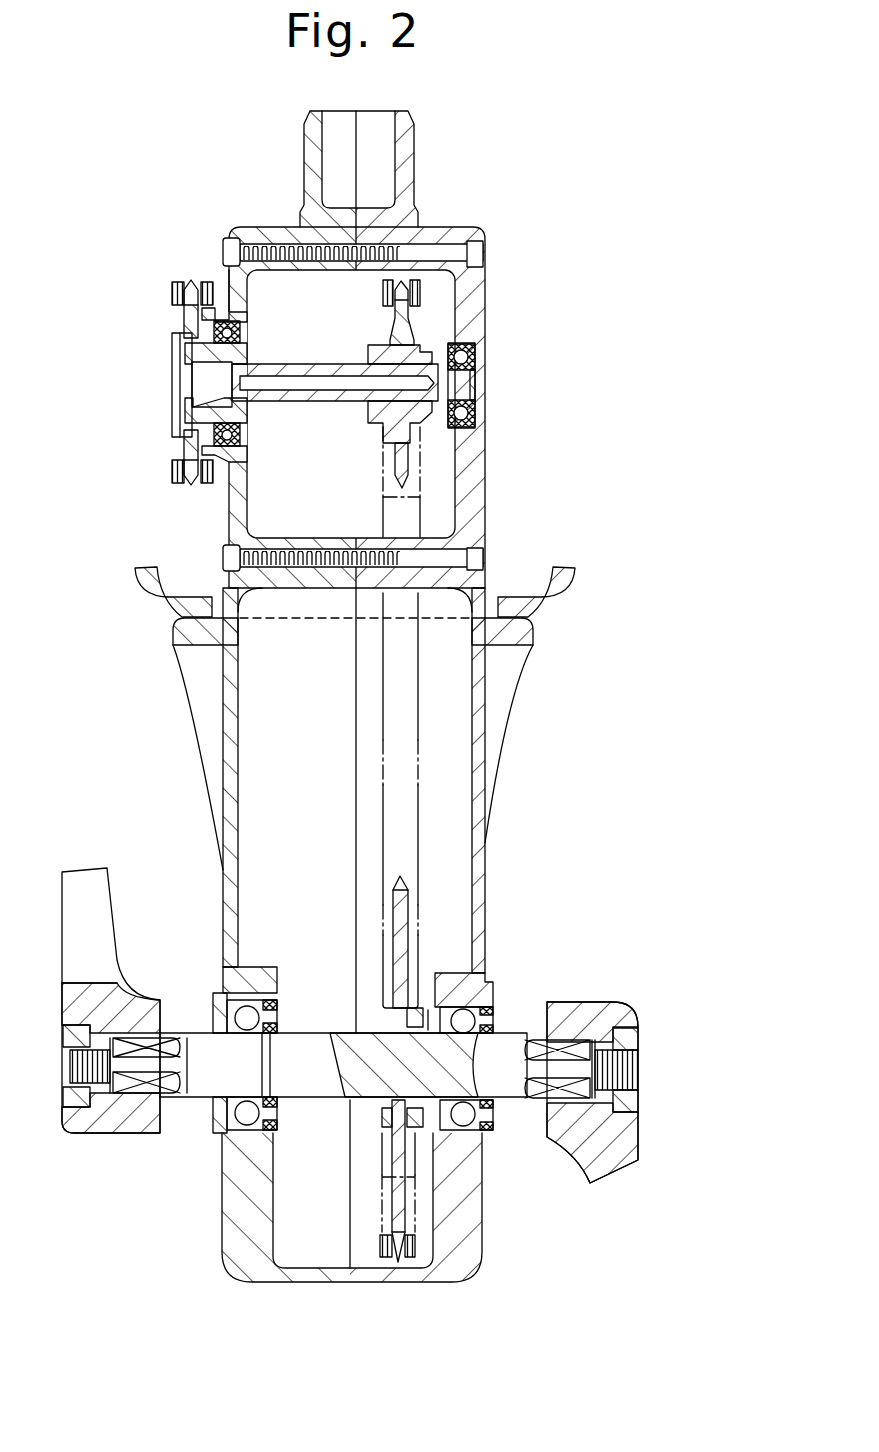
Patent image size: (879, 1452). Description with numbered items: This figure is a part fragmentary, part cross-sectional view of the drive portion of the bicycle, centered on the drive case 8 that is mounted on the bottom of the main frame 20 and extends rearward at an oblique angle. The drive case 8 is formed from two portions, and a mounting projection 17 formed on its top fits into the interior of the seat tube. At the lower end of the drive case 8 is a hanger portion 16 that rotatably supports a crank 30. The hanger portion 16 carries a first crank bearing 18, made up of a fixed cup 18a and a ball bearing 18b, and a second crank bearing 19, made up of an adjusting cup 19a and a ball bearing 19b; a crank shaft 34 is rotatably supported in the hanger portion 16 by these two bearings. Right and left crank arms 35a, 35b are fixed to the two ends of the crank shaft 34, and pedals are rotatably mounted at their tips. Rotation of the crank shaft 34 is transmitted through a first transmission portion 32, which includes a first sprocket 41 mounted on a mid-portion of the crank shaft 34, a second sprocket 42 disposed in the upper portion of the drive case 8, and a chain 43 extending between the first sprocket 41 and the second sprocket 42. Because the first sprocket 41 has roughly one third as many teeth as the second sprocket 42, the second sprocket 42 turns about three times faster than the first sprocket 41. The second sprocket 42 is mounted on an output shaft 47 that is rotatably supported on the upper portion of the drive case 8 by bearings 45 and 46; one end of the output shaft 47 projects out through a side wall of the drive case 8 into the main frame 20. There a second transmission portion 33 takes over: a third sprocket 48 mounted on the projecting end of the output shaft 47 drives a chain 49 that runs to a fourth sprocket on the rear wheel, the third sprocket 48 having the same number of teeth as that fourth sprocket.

The drive case 8 is at (490, 478).
The hanger portion 16 is at (485, 972).
The mounting projection 17 is at (412, 162).
The first crank bearing 18 is at (284, 987).
The fixed cup 18a is at (240, 1010).
The ball bearing 18b is at (260, 1020).
The second crank bearing 19 is at (515, 1140).
The adjusting cup 19a is at (462, 1136).
The ball bearing 19b is at (455, 1140).
The main frame 20 is at (562, 608).
The crank 30 is at (353, 1041).
The first transmission portion 32 is at (447, 772).
The second transmission portion 33 is at (154, 358).
The crank shaft 34 is at (205, 1088).
The right crank arm 35a is at (604, 1004).
The left crank arm 35b is at (105, 920).
The first sprocket 41 is at (404, 910).
The second sprocket 42 is at (408, 313).
The chain 43 is at (422, 716).
The bearing 45 is at (478, 422).
The bearing 46 is at (226, 462).
The output shaft 47 is at (302, 362).
The third sprocket 48 is at (172, 334).
The chain 49 is at (177, 281).